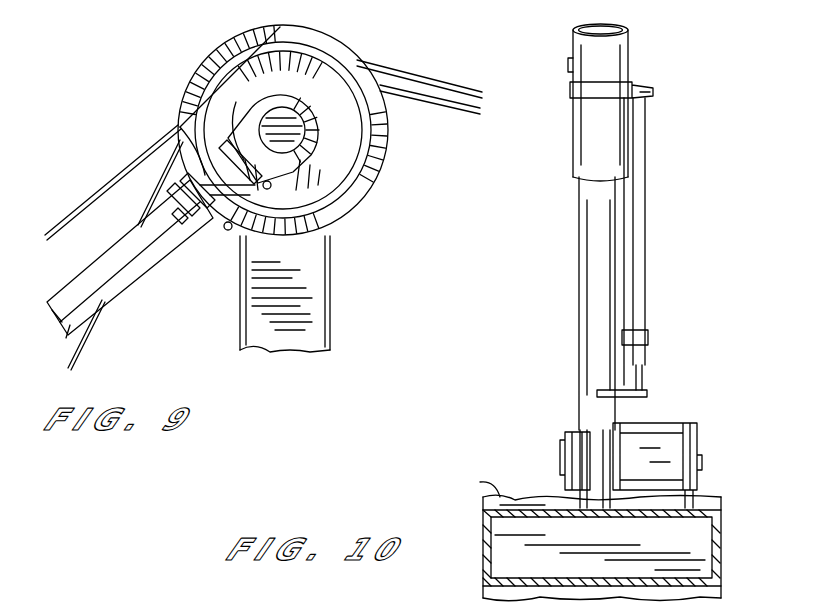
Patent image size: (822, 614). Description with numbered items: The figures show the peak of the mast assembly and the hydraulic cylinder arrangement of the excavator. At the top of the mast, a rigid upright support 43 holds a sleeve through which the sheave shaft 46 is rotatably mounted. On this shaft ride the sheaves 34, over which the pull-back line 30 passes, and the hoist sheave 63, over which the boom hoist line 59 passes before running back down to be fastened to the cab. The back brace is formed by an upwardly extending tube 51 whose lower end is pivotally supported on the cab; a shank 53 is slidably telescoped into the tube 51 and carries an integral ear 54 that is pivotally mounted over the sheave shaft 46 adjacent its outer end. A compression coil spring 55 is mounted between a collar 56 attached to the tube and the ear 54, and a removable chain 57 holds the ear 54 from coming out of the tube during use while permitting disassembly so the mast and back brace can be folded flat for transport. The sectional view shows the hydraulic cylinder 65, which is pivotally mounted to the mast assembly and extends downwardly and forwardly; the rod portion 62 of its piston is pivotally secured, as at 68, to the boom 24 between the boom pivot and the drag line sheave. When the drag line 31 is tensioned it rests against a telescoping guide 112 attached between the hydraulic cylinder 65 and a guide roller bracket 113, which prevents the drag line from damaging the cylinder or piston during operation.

In FIG. 10, the boom 24 is at (480, 482).
In FIG. 9, the pull-back line 30 is at (88, 350).
In FIG. 10, the drag line 31 is at (650, 337).
In FIG. 9, the sheaves 34 is at (370, 190).
In FIG. 9, the rigid upright supports 43 is at (310, 316).
In FIG. 9, the sheave shaft 46 is at (312, 150).
In FIG. 9, the tubes 51 is at (82, 275).
In FIG. 9, the shank 53 is at (180, 127).
In FIG. 9, the ear 54 is at (287, 92).
In FIG. 9, the compression coil spring 55 is at (224, 135).
In FIG. 9, the collar 56 is at (168, 178).
In FIG. 9, the removable chain 57 is at (228, 232).
In FIG. 9, the boom hoist line 59 is at (90, 195).
In FIG. 10, the rod portion 62 is at (578, 310).
In FIG. 9, the hoist sheave 63 is at (355, 150).
In FIG. 10, the hydraulic cylinder 65 is at (575, 135).
In FIG. 10, the pivotal securement 68 is at (560, 452).
In FIG. 10, the telescoping guide 112 is at (641, 248).
In FIG. 10, the guide roller bracket 113 is at (692, 425).